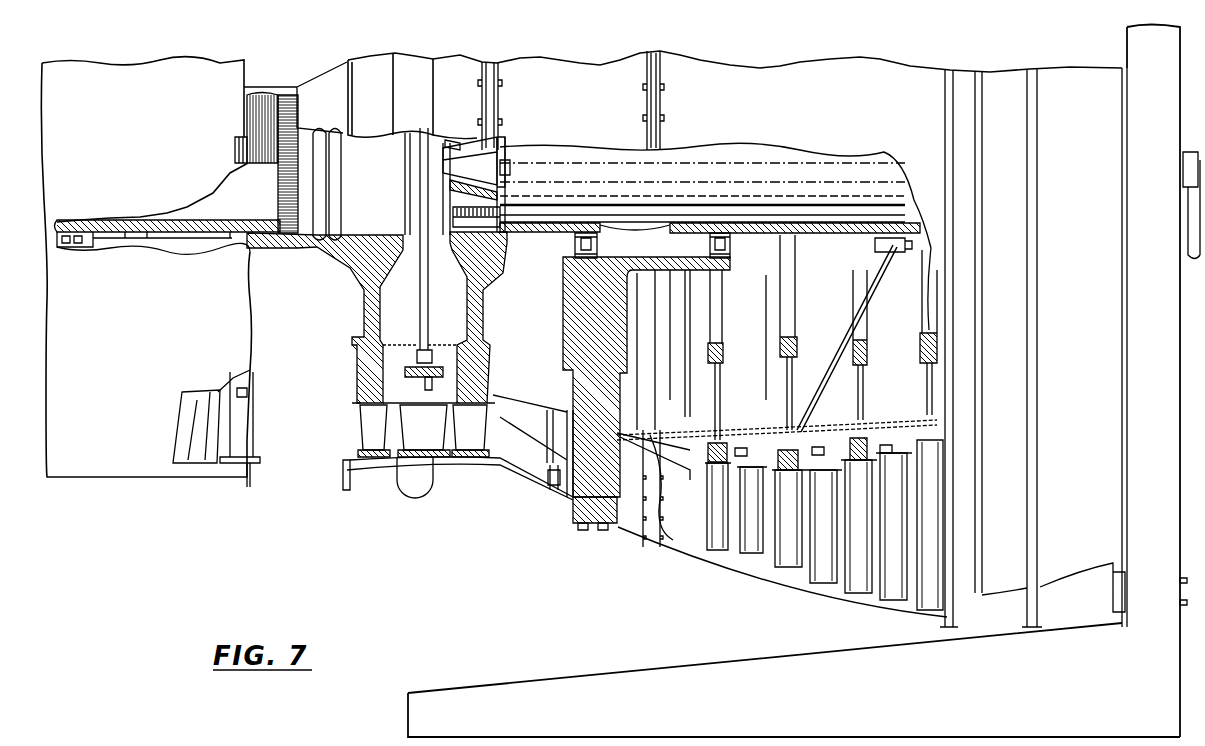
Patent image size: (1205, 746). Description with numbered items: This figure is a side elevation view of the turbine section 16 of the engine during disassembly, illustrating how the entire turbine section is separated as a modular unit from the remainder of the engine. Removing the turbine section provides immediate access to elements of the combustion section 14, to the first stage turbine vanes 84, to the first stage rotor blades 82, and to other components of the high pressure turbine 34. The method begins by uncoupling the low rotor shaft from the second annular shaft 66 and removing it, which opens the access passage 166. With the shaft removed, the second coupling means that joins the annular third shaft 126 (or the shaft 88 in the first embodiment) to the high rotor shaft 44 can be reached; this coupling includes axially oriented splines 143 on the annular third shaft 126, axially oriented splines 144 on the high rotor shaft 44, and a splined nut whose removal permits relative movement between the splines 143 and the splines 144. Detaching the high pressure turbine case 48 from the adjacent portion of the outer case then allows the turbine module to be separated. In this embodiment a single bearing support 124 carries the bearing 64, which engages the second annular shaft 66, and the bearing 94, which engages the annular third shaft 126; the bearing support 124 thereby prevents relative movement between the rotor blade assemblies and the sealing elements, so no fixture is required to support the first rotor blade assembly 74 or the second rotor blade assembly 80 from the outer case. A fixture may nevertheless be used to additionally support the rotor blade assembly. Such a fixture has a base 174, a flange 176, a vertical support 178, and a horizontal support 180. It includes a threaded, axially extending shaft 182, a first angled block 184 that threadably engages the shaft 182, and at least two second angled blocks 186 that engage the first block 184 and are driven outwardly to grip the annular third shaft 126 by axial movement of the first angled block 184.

The combustion section 14 is at (200, 428).
The turbine section 16 is at (610, 37).
The high pressure turbine 34 is at (485, 37).
The high rotor shaft 44 is at (233, 230).
The high pressure turbine case 48 is at (343, 477).
The bearing 64 is at (733, 238).
The second annular shaft 66 is at (830, 243).
The first rotor blade assembly 74 is at (727, 363).
The second rotor blade assembly 80 is at (352, 359).
The first stage rotor blades 82 is at (362, 430).
The first stage turbine vanes 84 is at (243, 430).
The shaft 88 is at (405, 233).
The bearing 94 is at (568, 253).
The bearing support 124 is at (563, 325).
The annular third shaft 126 is at (322, 260).
The splines 143 is at (300, 220).
The splines 144 is at (172, 248).
The access passage 166 is at (667, 224).
The base 174 is at (967, 697).
The flange 176 is at (1117, 598).
The vertical support 178 is at (1163, 316).
The horizontal support 180 is at (580, 170).
The axially extending shaft 182 is at (505, 167).
The first angled block 184 is at (492, 172).
The second angled blocks 186 is at (460, 144).